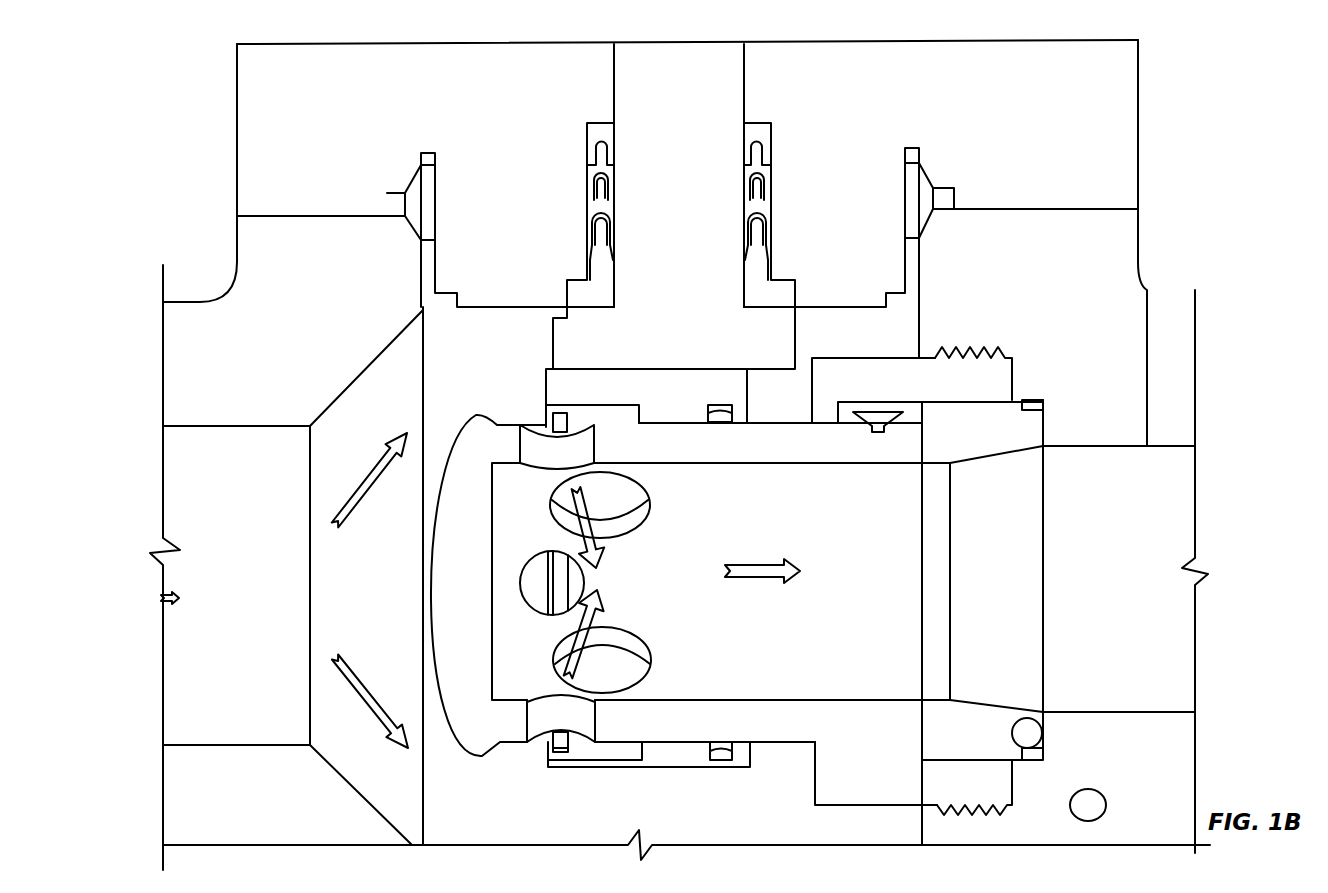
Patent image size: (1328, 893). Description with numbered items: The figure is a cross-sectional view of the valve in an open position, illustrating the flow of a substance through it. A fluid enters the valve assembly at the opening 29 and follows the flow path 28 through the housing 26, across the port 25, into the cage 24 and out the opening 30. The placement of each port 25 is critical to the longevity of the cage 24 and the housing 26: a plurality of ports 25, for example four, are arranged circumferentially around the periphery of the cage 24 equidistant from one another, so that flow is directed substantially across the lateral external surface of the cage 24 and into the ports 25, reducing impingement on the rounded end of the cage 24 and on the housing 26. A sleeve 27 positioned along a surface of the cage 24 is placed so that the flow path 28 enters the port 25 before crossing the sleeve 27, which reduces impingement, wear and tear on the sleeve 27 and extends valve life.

The cage 24 is at (797, 421).
The port 25 is at (633, 497).
The housing 26 is at (533, 42).
The sleeve 27 is at (587, 767).
The flow path 28 is at (593, 597).
The opening 29 is at (175, 590).
The opening 30 is at (1052, 571).